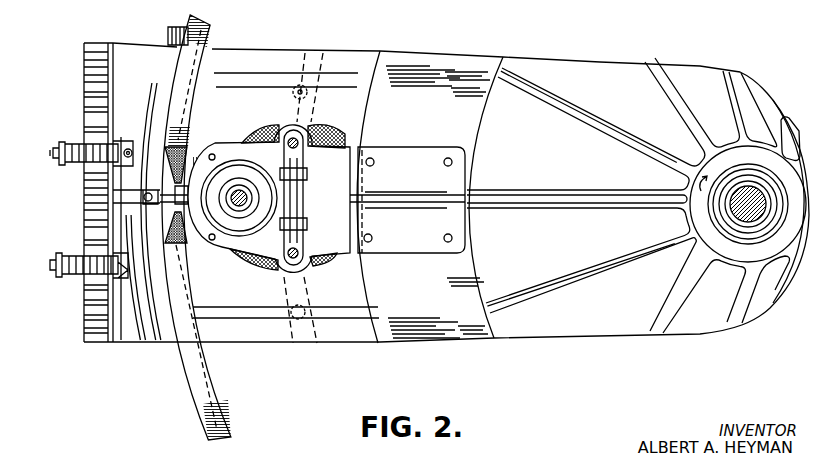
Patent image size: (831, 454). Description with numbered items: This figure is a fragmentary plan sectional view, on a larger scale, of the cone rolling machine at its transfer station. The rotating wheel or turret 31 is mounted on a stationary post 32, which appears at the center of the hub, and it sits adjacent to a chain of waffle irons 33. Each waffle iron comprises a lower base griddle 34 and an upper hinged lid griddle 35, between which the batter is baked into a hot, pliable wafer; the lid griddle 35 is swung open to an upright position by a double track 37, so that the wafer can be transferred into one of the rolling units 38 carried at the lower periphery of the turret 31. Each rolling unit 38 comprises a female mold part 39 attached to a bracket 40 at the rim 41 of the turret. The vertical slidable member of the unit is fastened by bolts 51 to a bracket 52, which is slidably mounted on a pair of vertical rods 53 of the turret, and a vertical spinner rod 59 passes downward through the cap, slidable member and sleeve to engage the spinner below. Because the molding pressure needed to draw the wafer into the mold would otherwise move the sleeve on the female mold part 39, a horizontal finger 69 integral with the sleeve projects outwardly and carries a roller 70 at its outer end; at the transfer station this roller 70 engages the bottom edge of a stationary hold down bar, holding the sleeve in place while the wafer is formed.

The rotating wheel or turret 31 is at (399, 300).
The stationary post 32 is at (735, 207).
The chain of waffle irons 33 is at (313, 44).
The lower base griddle 34 is at (358, 110).
The upper hinged lid griddle 35 is at (157, 93).
The double track 37 is at (150, 342).
The rolling unit 38 is at (221, 137).
The female mold part 39 is at (225, 249).
The bracket 40 is at (410, 157).
The rim 41 is at (377, 340).
The bolts 51 is at (298, 200).
The bracket 52 is at (282, 123).
The vertical rods 53 is at (297, 140).
The vertical spinner rod 59 is at (245, 205).
The horizontal finger 69 is at (203, 193).
The roller 70 is at (226, 237).